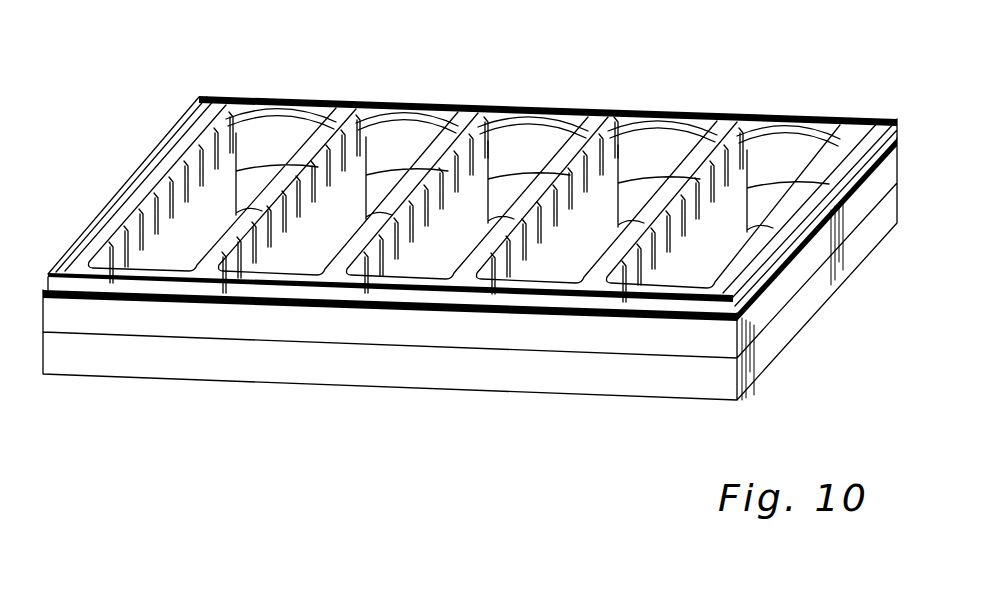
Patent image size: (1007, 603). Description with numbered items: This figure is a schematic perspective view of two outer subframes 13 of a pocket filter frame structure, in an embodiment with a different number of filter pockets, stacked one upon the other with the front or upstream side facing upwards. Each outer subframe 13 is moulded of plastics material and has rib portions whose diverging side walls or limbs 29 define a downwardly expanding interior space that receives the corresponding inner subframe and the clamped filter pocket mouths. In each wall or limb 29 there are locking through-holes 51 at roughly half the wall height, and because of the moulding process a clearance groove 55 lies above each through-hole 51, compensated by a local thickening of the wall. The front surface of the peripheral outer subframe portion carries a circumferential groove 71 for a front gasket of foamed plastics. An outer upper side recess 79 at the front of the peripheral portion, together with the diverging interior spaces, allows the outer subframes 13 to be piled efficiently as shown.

The outer subframe 13 is at (214, 325).
The side wall or limb 29 is at (440, 98).
The through-hole 51 is at (612, 160).
The clearance groove 55 is at (228, 147).
The circumferential groove 71 is at (112, 228).
The outer upper side recess 79 is at (356, 296).